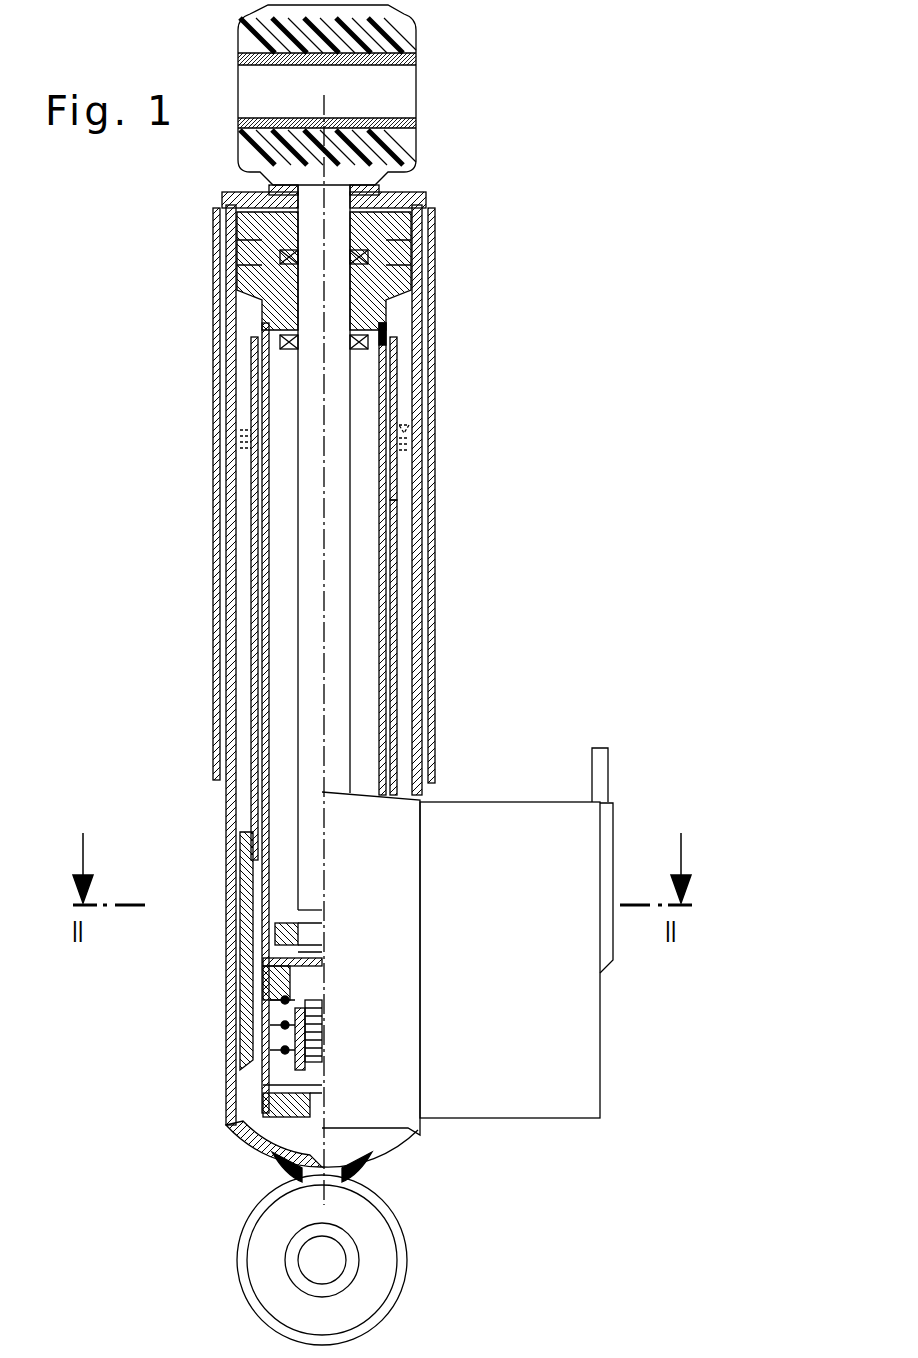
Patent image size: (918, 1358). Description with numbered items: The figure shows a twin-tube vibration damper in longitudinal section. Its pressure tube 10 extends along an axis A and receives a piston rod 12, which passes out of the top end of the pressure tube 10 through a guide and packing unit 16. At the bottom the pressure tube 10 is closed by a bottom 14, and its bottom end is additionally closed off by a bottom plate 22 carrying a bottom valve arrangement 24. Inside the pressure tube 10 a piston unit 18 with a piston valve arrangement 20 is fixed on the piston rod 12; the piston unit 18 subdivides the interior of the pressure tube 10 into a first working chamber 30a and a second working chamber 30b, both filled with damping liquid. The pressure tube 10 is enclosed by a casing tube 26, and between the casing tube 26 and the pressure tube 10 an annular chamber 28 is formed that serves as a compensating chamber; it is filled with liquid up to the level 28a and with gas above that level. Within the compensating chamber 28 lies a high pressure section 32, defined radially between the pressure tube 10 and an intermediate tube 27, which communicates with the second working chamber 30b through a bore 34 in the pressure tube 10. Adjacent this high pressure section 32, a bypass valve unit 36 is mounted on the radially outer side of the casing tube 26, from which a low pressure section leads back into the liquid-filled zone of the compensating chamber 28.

The pressure tube 10 is at (393, 615).
The piston rod 12 is at (340, 488).
The bottom 14 is at (228, 1128).
The guide and packing unit 16 is at (398, 300).
The piston unit 18 is at (262, 1003).
The piston valve arrangement 20 is at (283, 935).
The bottom plate 22 is at (262, 1115).
The bottom valve arrangement 24 is at (275, 1160).
The casing tube 26 is at (418, 540).
The intermediate tube 27 is at (258, 708).
The annular chamber 28 is at (384, 575).
The level 28a is at (246, 432).
The first working chamber 30a is at (268, 1052).
The second working chamber 30b is at (278, 542).
The high pressure section 32 is at (390, 398).
The bore 34 is at (387, 370).
The bypass valve unit 36 is at (518, 795).
The axis A is at (320, 596).